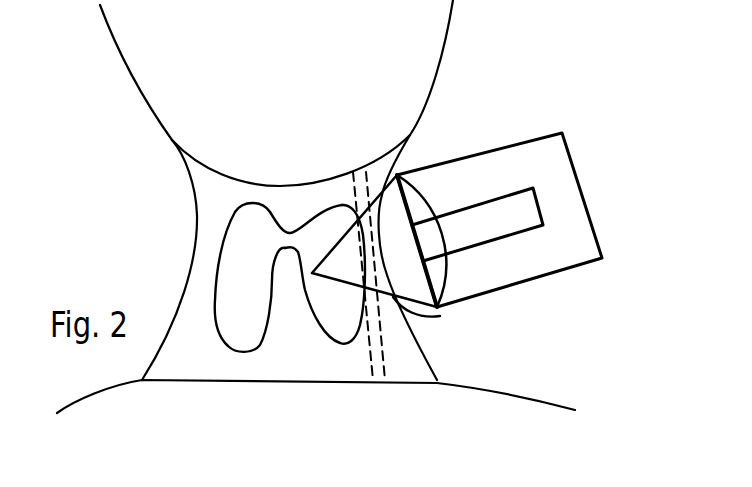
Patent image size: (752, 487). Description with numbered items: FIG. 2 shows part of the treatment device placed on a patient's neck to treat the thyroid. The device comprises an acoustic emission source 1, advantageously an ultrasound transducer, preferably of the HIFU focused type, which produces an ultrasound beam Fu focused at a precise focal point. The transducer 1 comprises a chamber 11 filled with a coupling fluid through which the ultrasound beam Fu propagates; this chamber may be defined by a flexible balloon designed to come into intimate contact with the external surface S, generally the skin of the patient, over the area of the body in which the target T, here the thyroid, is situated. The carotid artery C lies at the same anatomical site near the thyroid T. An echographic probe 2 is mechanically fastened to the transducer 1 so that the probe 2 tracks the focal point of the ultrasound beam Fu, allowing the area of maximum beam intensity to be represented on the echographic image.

The acoustic emission source 1 is at (447, 266).
The echographic probe 2 is at (502, 215).
The chamber 11 is at (407, 282).
The external surface S is at (413, 333).
The thyroid T is at (243, 300).
The ultrasound beam Fu is at (333, 345).
The carotid artery C is at (385, 343).